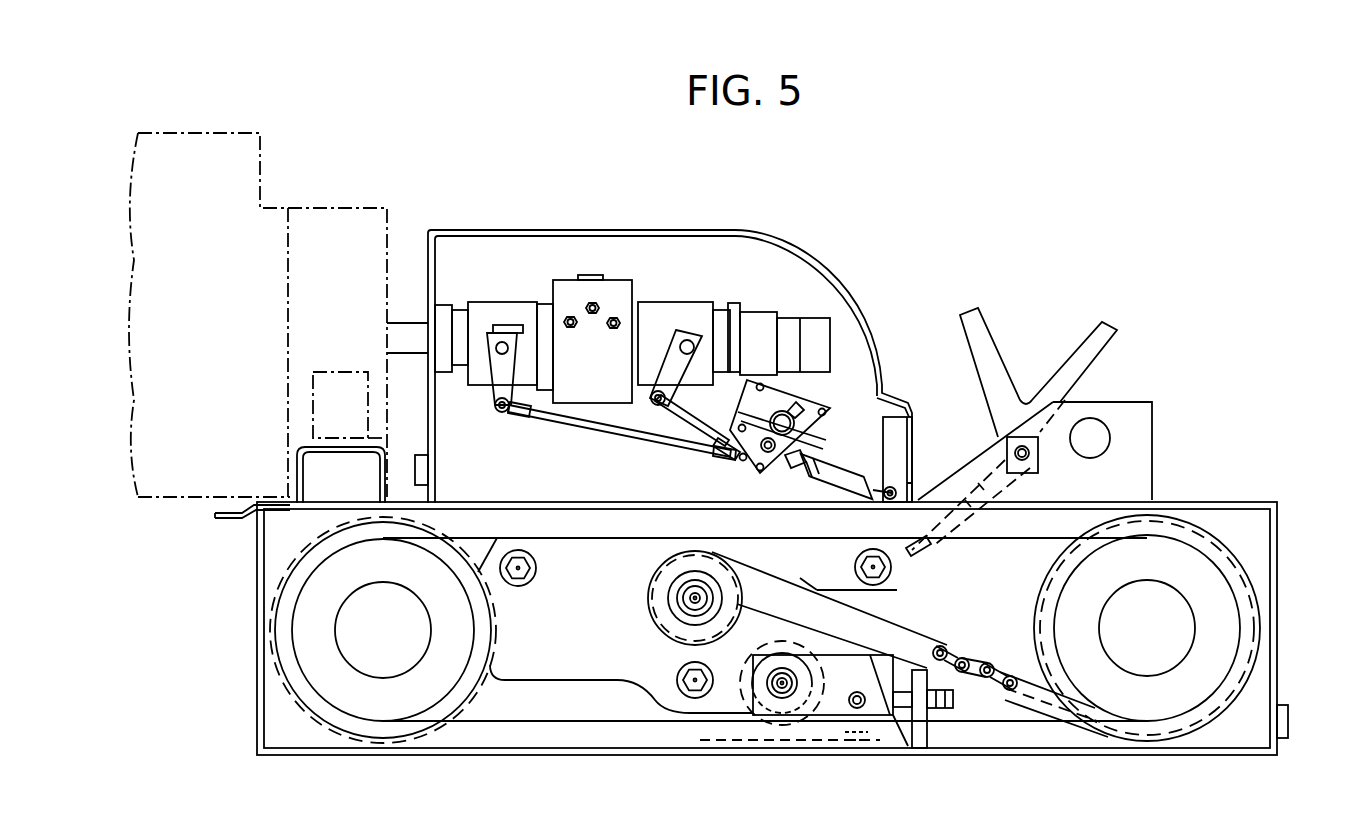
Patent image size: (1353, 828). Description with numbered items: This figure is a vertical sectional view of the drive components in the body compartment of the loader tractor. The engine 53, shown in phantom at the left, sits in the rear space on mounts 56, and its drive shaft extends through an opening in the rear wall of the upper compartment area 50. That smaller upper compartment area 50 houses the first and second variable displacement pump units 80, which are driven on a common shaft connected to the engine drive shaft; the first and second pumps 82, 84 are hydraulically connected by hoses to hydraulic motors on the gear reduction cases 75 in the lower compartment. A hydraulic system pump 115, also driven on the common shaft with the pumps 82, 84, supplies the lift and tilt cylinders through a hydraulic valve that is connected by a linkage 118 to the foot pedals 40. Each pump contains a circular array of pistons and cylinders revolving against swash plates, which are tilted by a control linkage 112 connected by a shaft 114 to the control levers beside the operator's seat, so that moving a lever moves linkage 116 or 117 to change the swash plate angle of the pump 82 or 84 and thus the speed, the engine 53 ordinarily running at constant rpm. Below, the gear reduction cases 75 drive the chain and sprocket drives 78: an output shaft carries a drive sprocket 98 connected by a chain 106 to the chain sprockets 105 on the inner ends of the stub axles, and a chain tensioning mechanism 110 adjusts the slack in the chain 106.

The foot pedals 40 is at (1116, 354).
The upper compartment area 50 is at (763, 267).
The engine 53 is at (233, 203).
The mounts 56 is at (297, 453).
The gear reduction case 75 is at (585, 607).
The chain and sprocket drive 78 is at (938, 621).
The variable displacement pump units 80 is at (644, 288).
The first pump 82 is at (497, 307).
The second pump 84 is at (687, 305).
The drive sprocket 98 is at (675, 605).
The chain sprockets 105 is at (453, 648).
The chain 106 is at (1032, 693).
The chain tensioning mechanism 110 is at (847, 667).
The control linkage 112 is at (590, 446).
The shaft 114 is at (785, 420).
The hydraulic system pump 115 is at (792, 330).
The linkage 116 is at (517, 412).
The linkage 117 is at (675, 410).
The linkage 118 is at (972, 455).